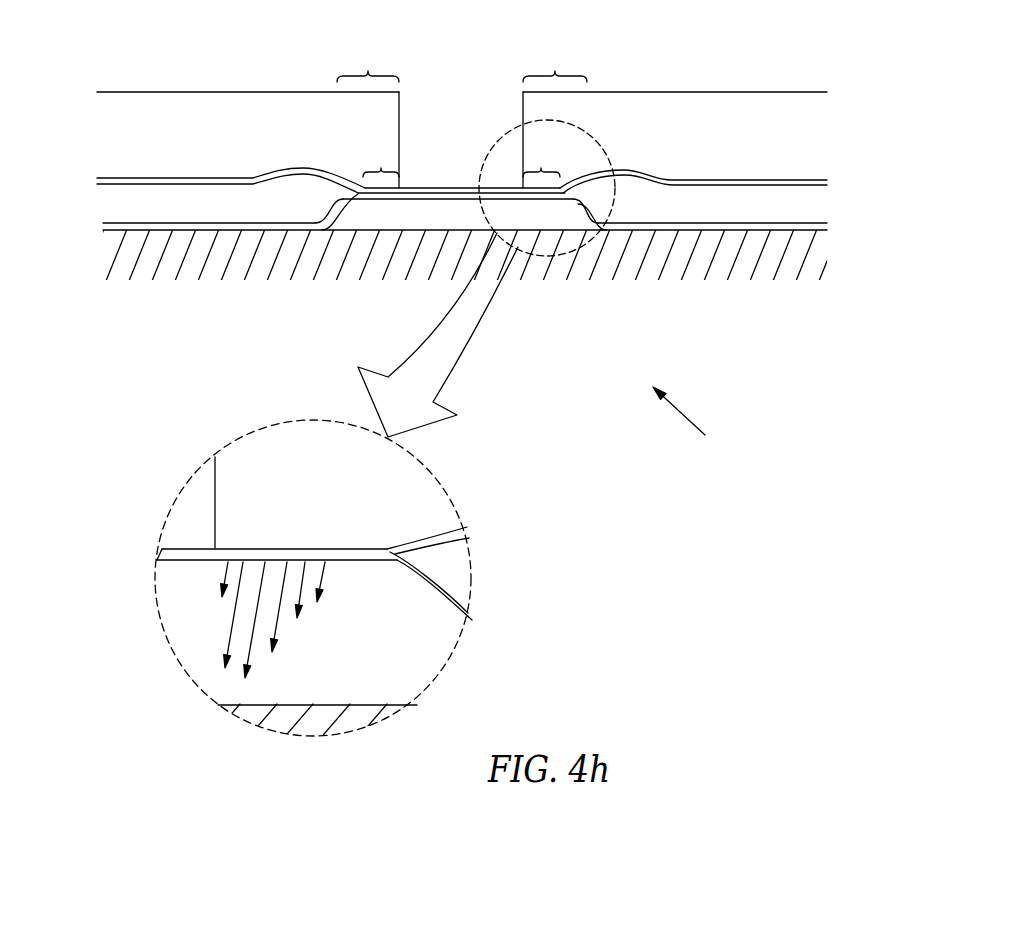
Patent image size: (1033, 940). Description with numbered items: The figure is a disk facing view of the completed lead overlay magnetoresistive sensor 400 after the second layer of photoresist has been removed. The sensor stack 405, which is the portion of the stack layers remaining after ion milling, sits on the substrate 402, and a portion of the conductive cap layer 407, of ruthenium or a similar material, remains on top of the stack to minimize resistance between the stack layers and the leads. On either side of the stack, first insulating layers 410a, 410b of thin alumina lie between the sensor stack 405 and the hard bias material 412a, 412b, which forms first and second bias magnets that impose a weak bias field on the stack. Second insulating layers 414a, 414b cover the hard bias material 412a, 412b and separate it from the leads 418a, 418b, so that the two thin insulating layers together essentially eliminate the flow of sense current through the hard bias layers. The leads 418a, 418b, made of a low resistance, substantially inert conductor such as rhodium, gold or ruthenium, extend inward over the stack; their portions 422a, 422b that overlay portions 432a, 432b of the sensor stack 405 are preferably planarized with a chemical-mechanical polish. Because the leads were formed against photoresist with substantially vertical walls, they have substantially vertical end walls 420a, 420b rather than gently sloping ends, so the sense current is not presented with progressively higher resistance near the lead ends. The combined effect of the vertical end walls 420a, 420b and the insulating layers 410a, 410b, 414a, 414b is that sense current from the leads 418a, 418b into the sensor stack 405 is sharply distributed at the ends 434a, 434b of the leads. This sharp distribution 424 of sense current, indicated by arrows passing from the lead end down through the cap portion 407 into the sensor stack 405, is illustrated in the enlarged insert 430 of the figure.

The magnetoresistive sensor 400 is at (695, 421).
The substrate 402 is at (823, 252).
The sensor stack 405 is at (362, 220).
The portion of the conductive cap layer 407 is at (415, 197).
The first insulating layer 410a is at (828, 226).
The first insulating layer 410b is at (103, 223).
The hard bias material 412a is at (822, 197).
The hard bias material 412b is at (100, 196).
The second insulating layer 414a is at (783, 180).
The second insulating layer 414b is at (150, 178).
The lead 418a is at (721, 98).
The lead 418b is at (191, 98).
The vertical end wall 420a is at (523, 110).
The vertical end wall 420b is at (399, 118).
The portion of the lead 422a is at (555, 61).
The portion of the lead 422b is at (368, 61).
The sharp distribution of sense current 424 is at (218, 660).
The insert 430 is at (603, 144).
The portion of the sensor stack 432a is at (545, 158).
The portion of the sensor stack 432b is at (378, 158).
The end of the lead 434a is at (522, 187).
The end of the lead 434b is at (400, 183).